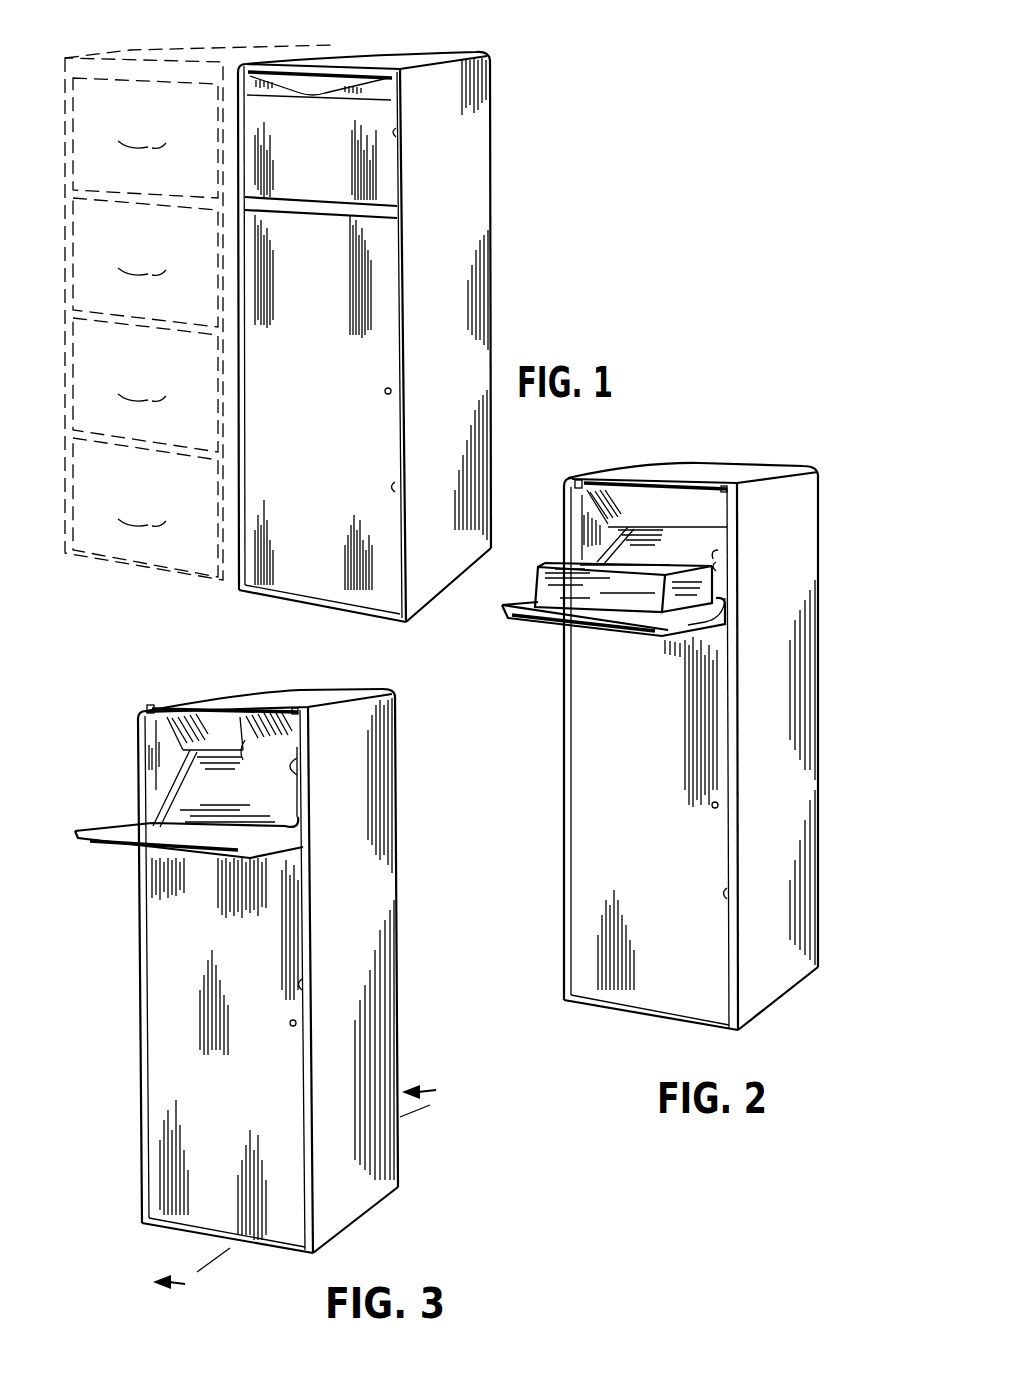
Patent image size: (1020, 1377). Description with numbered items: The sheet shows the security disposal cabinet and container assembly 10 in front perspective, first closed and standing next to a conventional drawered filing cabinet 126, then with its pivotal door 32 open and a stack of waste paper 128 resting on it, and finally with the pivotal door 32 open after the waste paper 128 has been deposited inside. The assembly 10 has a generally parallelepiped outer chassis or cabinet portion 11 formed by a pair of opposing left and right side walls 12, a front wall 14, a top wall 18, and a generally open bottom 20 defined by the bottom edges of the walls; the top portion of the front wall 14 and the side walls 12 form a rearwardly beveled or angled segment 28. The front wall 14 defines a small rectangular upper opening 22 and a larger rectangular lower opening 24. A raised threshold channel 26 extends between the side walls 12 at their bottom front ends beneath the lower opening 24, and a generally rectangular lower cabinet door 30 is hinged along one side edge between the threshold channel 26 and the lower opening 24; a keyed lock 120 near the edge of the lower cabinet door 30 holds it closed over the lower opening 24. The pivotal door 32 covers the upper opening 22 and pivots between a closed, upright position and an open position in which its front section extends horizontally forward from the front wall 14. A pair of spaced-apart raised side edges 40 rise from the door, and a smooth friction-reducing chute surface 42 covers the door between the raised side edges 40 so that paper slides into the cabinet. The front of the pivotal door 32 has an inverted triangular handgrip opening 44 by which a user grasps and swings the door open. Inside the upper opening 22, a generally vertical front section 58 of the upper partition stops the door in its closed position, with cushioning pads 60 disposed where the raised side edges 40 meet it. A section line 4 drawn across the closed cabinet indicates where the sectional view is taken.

In FIG. 3, the section line 4- 4 is at (305, 1192).
In FIG. 1, the security disposal cabinet and container assembly 10 is at (548, 113).
In FIG. 2, the security disposal cabinet and container assembly 10 is at (776, 444).
In FIG. 3, the security disposal cabinet and container assembly 10 is at (84, 668).
In FIG. 1, the outer chassis or cabinet portion 11 is at (495, 293).
In FIG. 2, the outer chassis or cabinet portion 11 is at (824, 540).
In FIG. 3, the outer chassis or cabinet portion 11 is at (401, 943).
In FIG. 1, the side walls 12 is at (376, 335).
In FIG. 2, the side walls 12 is at (701, 745).
In FIG. 3, the side walls 12 is at (264, 973).
In FIG. 1, the front wall 14 is at (324, 212).
In FIG. 2, the front wall 14 is at (567, 750).
In FIG. 3, the front wall 14 is at (145, 1186).
In FIG. 1, the top wall 18 is at (380, 54).
In FIG. 2, the top wall 18 is at (688, 468).
In FIG. 3, the top wall 18 is at (222, 692).
In FIG. 1, the open bottom 20 is at (430, 608).
In FIG. 2, the open bottom 20 is at (787, 992).
In FIG. 3, the open bottom 20 is at (375, 1212).
In FIG. 1, the upper opening 22 is at (398, 136).
In FIG. 2, the upper opening 22 is at (716, 566).
In FIG. 3, the upper opening 22 is at (298, 770).
In FIG. 1, the lower opening 24 is at (398, 490).
In FIG. 2, the lower opening 24 is at (727, 895).
In FIG. 3, the lower opening 24 is at (302, 985).
In FIG. 1, the threshold channel 26 is at (272, 598).
In FIG. 2, the threshold channel 26 is at (655, 1017).
In FIG. 3, the threshold channel 26 is at (258, 1250).
In FIG. 1, the beveled or angled segment 28 is at (404, 80).
In FIG. 2, the beveled or angled segment 28 is at (741, 493).
In FIG. 3, the beveled or angled segment 28 is at (138, 712).
In FIG. 1, the lower cabinet door 30 is at (327, 361).
In FIG. 2, the lower cabinet door 30 is at (640, 806).
In FIG. 3, the lower cabinet door 30 is at (232, 971).
In FIG. 1, the pivotal door 32 is at (326, 156).
In FIG. 2, the pivotal door 32 is at (509, 620).
In FIG. 3, the pivotal door 32 is at (93, 852).
In FIG. 2, the raised side edges 40 is at (716, 606).
In FIG. 3, the raised side edges 40 is at (175, 790).
In FIG. 2, the chute surface 42 is at (713, 556).
In FIG. 3, the chute surface 42 is at (247, 755).
In FIG. 1, the handgrip opening 44 is at (328, 88).
In FIG. 2, the vertical front section 58 is at (630, 482).
In FIG. 3, the vertical front section 58 is at (160, 707).
In FIG. 2, the cushioning pads 60 is at (574, 485).
In FIG. 3, the cushioning pads 60 is at (147, 708).
In FIG. 1, the keyed lock 120 is at (385, 394).
In FIG. 2, the keyed lock 120 is at (714, 810).
In FIG. 3, the keyed lock 120 is at (290, 1028).
In FIG. 1, the drawered filing cabinets 126 is at (138, 46).
In FIG. 2, the waste paper 128 is at (565, 600).